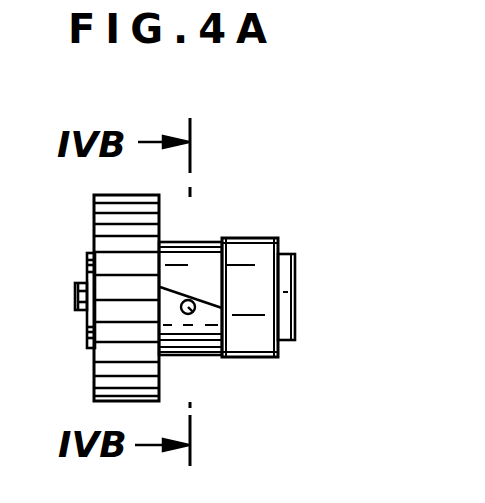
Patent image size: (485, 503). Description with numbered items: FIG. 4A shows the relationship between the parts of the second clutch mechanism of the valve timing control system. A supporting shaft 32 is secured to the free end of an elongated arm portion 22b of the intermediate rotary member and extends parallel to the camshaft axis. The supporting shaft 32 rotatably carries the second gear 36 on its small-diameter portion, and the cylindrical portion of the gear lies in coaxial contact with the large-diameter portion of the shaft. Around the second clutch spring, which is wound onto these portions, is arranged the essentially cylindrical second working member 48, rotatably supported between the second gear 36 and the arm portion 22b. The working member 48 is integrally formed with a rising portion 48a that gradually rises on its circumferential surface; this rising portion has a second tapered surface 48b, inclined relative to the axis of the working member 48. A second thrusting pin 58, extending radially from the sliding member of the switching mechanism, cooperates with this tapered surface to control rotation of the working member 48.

The second gear 36 is at (117, 243).
The second working member 48 is at (193, 243).
The rising portion 48a is at (212, 247).
The second tapered surface 48b is at (168, 294).
The second thrusting pin 58 is at (195, 312).
The arm portion 22b is at (278, 308).
The supporting shaft 32 is at (297, 283).